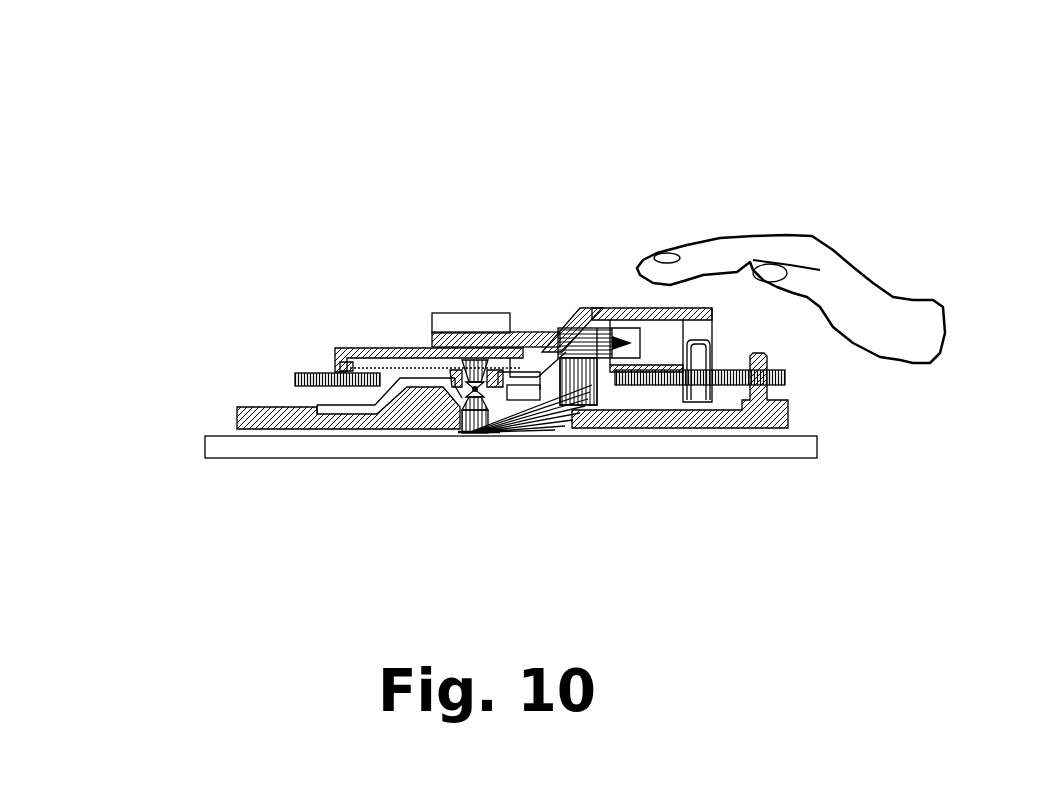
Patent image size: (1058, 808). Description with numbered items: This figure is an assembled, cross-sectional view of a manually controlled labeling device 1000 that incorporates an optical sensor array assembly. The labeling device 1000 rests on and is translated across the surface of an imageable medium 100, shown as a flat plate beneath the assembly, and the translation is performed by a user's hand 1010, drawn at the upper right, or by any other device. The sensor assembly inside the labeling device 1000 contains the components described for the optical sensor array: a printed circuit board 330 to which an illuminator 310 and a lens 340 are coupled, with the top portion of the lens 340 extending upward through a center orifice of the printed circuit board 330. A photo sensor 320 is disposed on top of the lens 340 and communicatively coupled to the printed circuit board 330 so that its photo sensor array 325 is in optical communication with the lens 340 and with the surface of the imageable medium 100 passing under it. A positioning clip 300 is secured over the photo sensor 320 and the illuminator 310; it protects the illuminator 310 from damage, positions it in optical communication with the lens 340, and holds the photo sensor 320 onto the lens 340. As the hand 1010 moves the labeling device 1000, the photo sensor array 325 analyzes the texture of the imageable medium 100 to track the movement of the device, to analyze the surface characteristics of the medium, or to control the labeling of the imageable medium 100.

The manually controlled labeling device 1000 is at (460, 127).
The hand 1010 is at (793, 247).
The imageable medium 100 is at (205, 440).
The positioning clip 300 is at (527, 333).
The illuminator 310 is at (652, 332).
The photo sensor 320 is at (382, 347).
The photo sensor array 325 is at (476, 362).
The printed circuit board 330 is at (313, 372).
The lens 340 is at (320, 403).